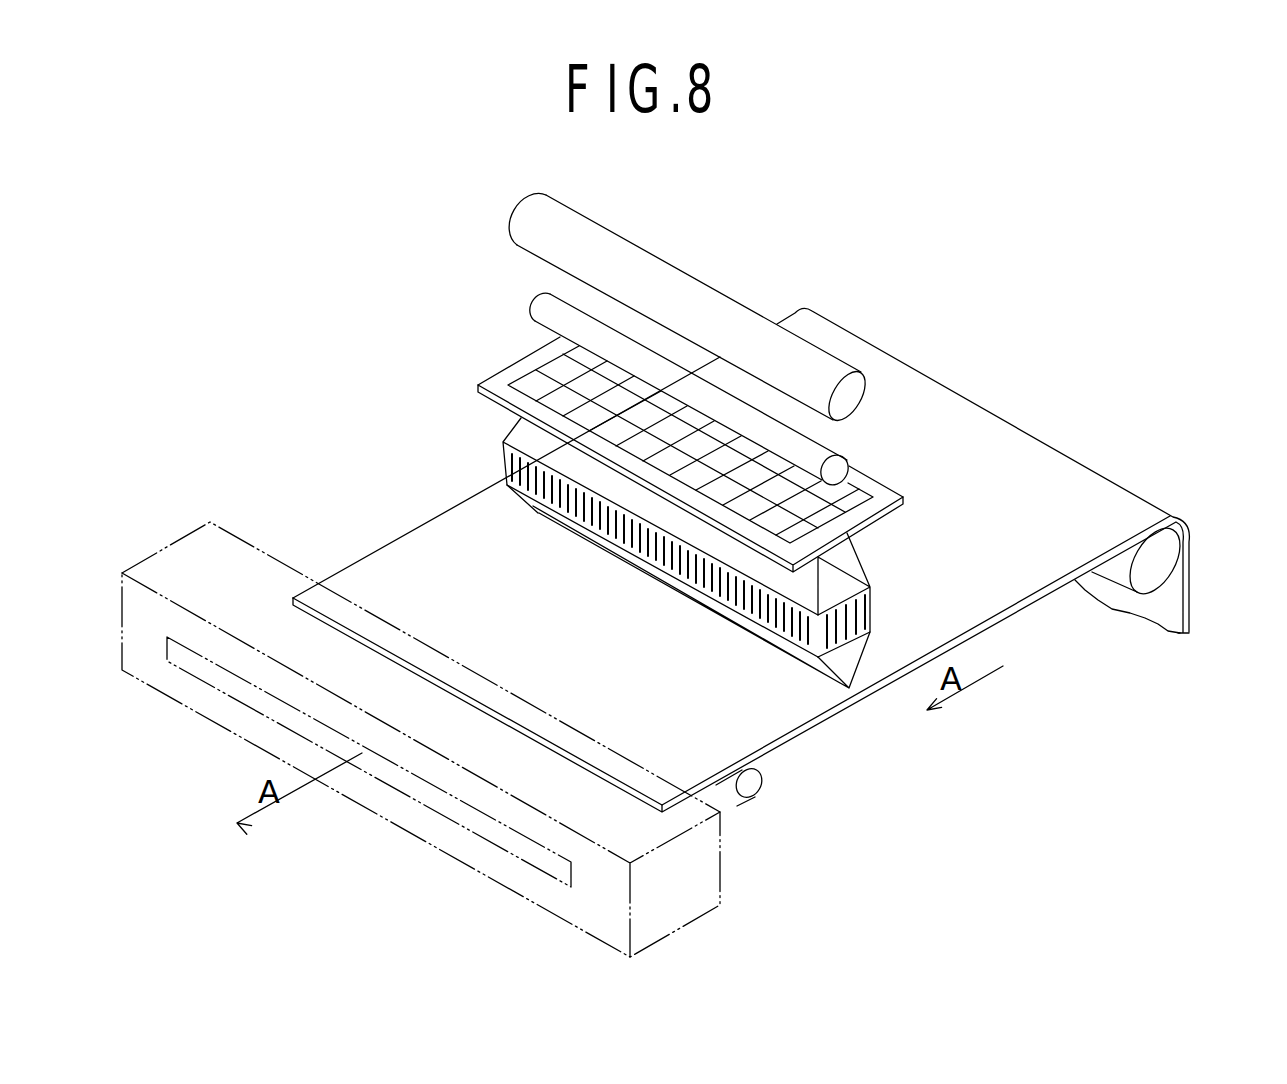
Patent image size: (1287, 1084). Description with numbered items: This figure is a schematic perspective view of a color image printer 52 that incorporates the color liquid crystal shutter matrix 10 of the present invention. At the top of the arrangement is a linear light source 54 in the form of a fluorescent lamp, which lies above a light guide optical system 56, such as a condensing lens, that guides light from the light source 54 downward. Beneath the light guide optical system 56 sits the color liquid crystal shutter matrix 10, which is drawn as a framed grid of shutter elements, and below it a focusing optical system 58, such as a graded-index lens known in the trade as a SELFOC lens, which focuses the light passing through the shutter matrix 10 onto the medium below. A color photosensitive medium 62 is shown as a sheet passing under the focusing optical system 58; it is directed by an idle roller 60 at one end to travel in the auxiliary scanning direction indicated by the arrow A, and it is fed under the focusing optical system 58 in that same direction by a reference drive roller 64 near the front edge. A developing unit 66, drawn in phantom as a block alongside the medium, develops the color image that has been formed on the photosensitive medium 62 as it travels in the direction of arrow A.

The color image printer 52 is at (757, 414).
The linear light source 54 is at (810, 363).
The light guide optical system 56 is at (838, 456).
The color liquid crystal shutter matrix 10 is at (905, 496).
The focusing optical system 58 is at (870, 588).
The color photosensitive medium 62 is at (1072, 493).
The idle roller 60 is at (1167, 555).
The reference drive roller 64 is at (755, 783).
The developing unit 66 is at (243, 550).